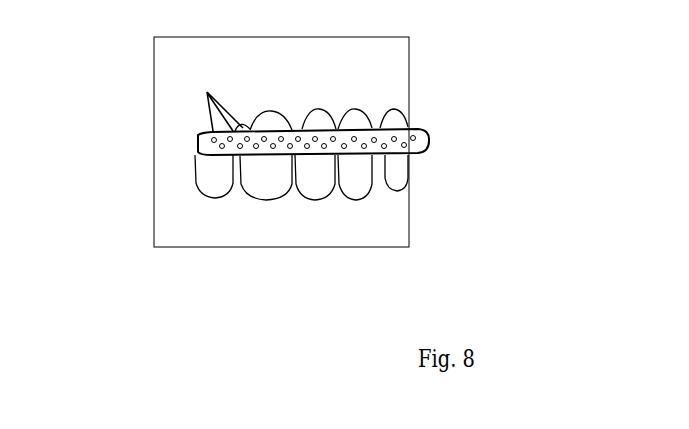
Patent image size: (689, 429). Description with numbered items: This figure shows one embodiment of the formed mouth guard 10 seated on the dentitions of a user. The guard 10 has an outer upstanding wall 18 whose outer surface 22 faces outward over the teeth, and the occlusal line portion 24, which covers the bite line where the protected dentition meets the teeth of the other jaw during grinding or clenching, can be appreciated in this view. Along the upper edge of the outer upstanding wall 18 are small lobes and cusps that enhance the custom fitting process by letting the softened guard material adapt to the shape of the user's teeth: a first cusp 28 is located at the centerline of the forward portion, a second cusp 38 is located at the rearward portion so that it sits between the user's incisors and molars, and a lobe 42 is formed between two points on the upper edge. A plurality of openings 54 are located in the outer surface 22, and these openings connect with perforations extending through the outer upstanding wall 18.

The mouth guard 10 is at (190, 142).
The outer upstanding wall 18 is at (255, 129).
The outer surface 22 is at (315, 128).
The occlusal line portion 24 is at (236, 156).
The first cusp 28 is at (412, 134).
The second cusp 38 is at (368, 126).
The lobe 42 is at (288, 129).
The openings 54 is at (205, 93).